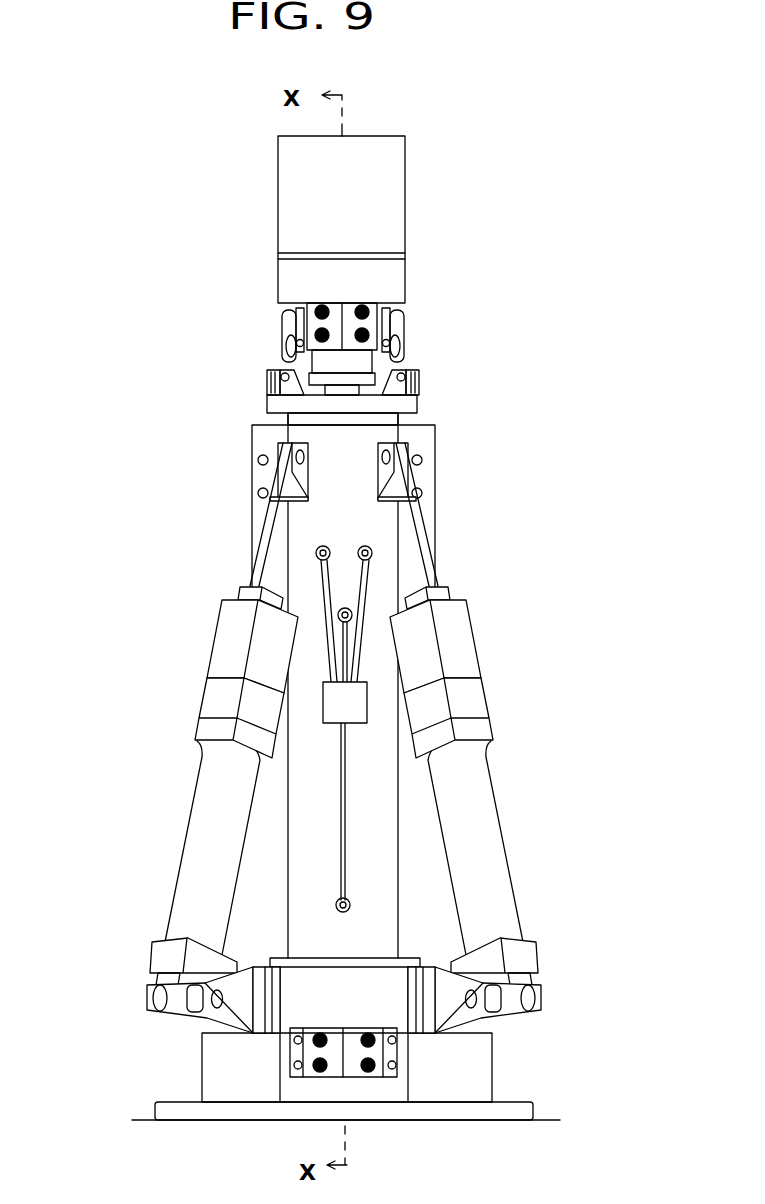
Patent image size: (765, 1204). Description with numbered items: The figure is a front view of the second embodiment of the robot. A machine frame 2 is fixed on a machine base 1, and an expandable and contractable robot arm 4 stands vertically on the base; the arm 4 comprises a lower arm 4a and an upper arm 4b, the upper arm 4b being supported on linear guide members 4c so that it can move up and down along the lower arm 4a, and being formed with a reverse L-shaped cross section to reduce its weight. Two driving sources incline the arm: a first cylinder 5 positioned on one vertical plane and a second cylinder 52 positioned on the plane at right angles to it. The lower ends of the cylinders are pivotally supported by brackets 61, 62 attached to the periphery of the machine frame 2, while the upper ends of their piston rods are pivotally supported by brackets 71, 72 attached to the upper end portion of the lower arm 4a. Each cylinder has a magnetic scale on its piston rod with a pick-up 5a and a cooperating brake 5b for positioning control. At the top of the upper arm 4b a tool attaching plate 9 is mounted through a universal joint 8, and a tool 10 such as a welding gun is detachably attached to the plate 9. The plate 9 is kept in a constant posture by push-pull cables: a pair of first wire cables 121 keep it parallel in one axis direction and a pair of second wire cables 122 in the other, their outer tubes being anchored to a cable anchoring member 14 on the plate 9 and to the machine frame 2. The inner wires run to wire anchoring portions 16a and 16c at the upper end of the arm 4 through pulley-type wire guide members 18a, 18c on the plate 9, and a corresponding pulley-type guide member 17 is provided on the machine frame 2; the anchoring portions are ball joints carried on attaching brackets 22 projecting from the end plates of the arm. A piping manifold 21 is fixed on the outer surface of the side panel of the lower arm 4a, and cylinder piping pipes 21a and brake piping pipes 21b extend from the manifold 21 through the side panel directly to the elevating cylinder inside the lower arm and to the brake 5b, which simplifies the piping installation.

The machine base 1 is at (186, 1115).
The machine frame 2 is at (460, 1075).
The robot arm 4 is at (283, 879).
The lower arm 4a is at (373, 923).
The upper arm 4b is at (368, 417).
The linear guide members 4c is at (252, 463).
The first cylinder 5 is at (492, 838).
The pick-up 5a is at (223, 652).
The brake 5b is at (218, 699).
The second cylinder 52 is at (201, 818).
The bracket 61 is at (543, 990).
The bracket 62 is at (197, 1023).
The bracket 71 is at (385, 473).
The bracket 72 is at (305, 478).
The universal joint 8 is at (362, 365).
The tool attaching plate 9 is at (392, 303).
The tool 10 is at (388, 210).
The first wire cables 121 is at (315, 312).
The second wire cables 122 is at (315, 334).
The cable anchoring member 14 is at (333, 312).
The first wire anchoring portion 16a is at (412, 381).
The second wire anchoring portion 16c is at (275, 383).
The wire guide member 17 is at (352, 1030).
The wire guide member 18a is at (404, 345).
The wire guide member 18c is at (283, 346).
The piping manifold 21 is at (337, 712).
The cylinder piping pipes 21a is at (348, 652).
The brake piping pipes 21b is at (333, 573).
The attaching brackets 22 is at (288, 396).